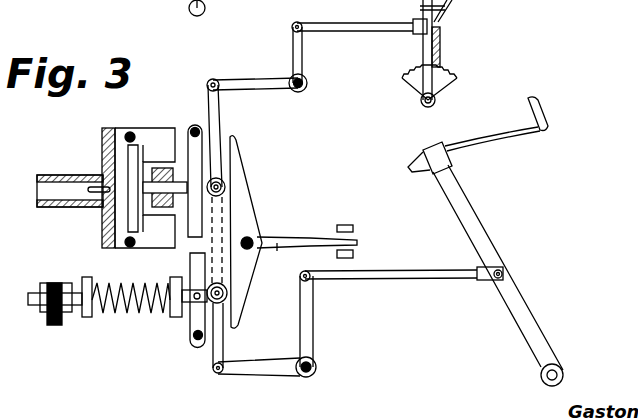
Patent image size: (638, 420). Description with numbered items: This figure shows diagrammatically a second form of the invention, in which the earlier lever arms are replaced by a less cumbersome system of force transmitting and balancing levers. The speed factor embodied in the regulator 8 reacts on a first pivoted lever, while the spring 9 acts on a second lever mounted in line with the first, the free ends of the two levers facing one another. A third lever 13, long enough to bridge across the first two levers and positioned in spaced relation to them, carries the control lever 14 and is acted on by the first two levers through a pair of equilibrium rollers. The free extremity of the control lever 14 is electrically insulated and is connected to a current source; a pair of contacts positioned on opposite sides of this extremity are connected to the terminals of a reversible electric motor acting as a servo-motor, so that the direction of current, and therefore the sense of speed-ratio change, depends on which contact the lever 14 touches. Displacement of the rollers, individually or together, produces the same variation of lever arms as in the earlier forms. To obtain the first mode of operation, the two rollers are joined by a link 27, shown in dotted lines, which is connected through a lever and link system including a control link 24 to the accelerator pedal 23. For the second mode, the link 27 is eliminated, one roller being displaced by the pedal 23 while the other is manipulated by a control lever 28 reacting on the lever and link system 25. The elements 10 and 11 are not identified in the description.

The regulator 8 is at (154, 143).
The spring 9 is at (137, 310).
The shaft 10 is at (161, 9).
The pin 11 is at (206, 9).
The third lever 13 is at (242, 228).
The control lever 14 is at (273, 250).
The accelerator pedal 23 is at (473, 222).
The control link 24 is at (307, 327).
The lever and link system 25 is at (300, 50).
The link 27 is at (235, 210).
The control lever 28 is at (437, 48).